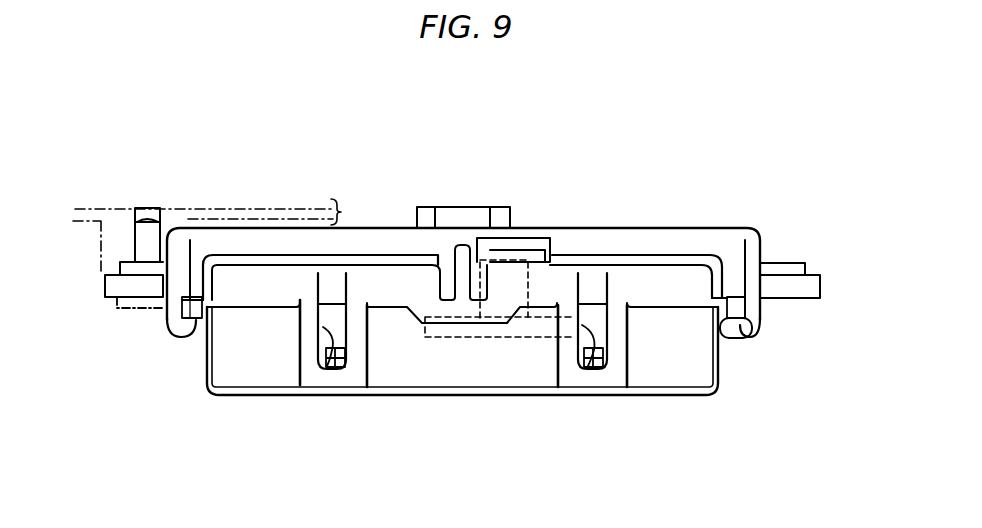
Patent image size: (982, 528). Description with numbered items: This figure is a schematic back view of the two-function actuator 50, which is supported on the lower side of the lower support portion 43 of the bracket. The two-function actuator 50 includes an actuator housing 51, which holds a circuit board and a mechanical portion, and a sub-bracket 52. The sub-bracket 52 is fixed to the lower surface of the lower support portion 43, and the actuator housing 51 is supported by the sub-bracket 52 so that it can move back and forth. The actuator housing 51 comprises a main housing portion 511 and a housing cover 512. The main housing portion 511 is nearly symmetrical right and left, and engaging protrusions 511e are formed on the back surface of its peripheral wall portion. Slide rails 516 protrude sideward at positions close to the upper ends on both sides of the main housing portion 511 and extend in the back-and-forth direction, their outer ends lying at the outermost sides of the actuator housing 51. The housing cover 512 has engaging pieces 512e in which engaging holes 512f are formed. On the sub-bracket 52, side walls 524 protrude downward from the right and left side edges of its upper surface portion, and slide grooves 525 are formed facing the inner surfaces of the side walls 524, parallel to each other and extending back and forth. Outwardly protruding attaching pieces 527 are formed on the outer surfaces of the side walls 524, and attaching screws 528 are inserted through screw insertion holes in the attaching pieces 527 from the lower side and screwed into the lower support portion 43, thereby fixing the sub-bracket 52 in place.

The lower support portion 43 is at (256, 208).
The two-function actuator 50 is at (832, 170).
The actuator housing 51 is at (430, 370).
The main housing portion 511 is at (684, 372).
The engaging protrusions 511e is at (334, 370).
The housing cover 512 is at (632, 280).
The engaging pieces 512e is at (305, 342).
The engaging holes 512f is at (330, 345).
The sub-bracket 52 is at (597, 243).
The slide rails 516 is at (177, 318).
The side walls 524 is at (756, 318).
The slide grooves 525 is at (744, 272).
The attaching pieces 527 is at (110, 283).
The attaching screws 528 is at (112, 302).